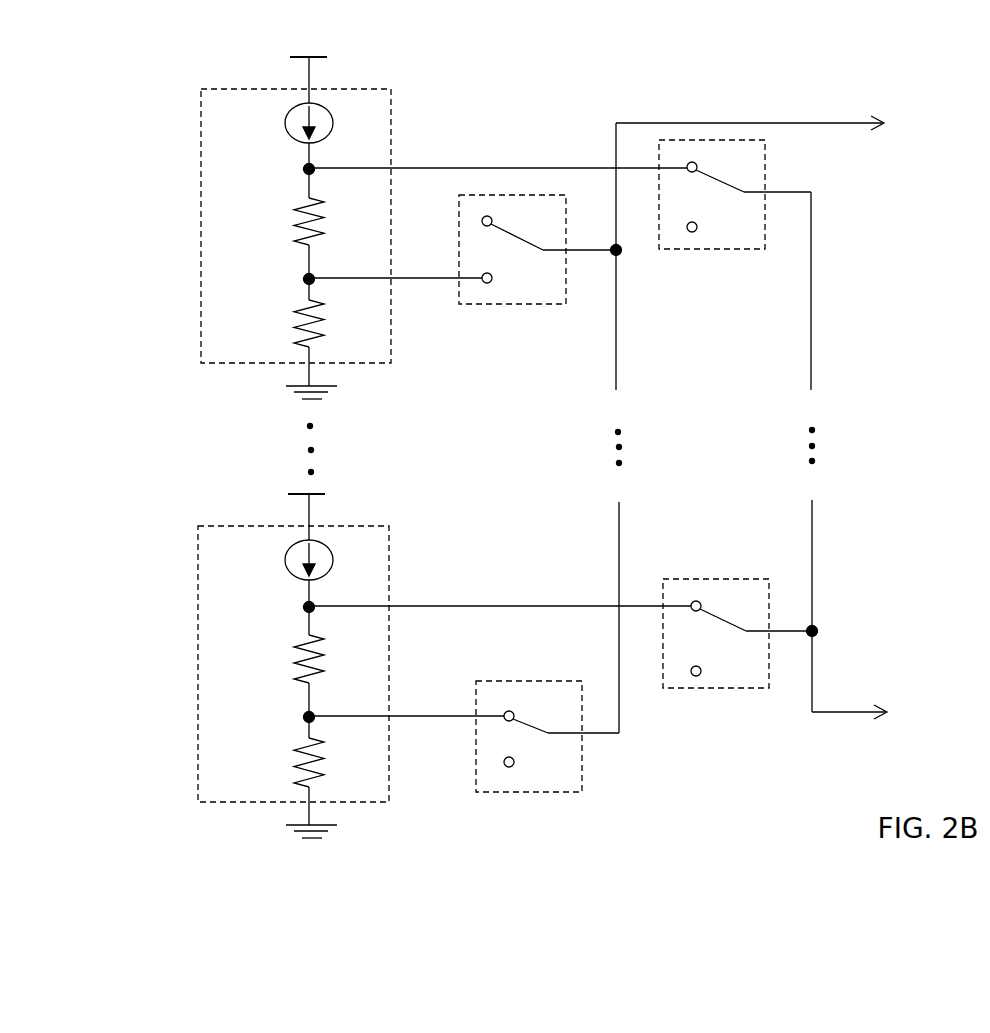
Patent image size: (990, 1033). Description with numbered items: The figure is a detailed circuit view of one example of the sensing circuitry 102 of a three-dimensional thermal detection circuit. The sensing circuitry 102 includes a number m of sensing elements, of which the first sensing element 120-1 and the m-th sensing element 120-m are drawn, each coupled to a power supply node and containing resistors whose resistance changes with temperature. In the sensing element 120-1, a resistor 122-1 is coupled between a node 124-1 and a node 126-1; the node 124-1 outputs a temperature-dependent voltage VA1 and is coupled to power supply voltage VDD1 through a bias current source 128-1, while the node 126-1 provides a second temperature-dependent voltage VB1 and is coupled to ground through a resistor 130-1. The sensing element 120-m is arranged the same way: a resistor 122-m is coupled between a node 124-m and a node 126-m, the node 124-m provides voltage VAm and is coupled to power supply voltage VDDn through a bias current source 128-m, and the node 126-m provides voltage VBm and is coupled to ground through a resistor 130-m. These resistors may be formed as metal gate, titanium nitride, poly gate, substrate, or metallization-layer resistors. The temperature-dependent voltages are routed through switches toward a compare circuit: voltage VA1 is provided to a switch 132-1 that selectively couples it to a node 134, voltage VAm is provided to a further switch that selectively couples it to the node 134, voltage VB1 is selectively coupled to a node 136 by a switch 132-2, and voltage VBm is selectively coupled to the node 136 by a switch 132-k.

The sensing circuitry 102 is at (487, 89).
The sensing element 120-1 is at (170, 82).
The sensing element 120-m is at (170, 518).
The resistor 122-1 is at (277, 224).
The resistor 122-m is at (275, 662).
The node 124-1 is at (304, 170).
The node 124-m is at (304, 608).
The node 126-1 is at (304, 280).
The node 126-m is at (304, 718).
The bias current source 128-1 is at (299, 107).
The bias current source 128-m is at (297, 545).
The resistor 130-1 is at (283, 339).
The resistor 130-m is at (281, 777).
The switch 132-1 is at (717, 250).
The switch 132-2 is at (518, 305).
The switch 132-k is at (582, 775).
The node 134 is at (818, 631).
The node 136 is at (619, 253).